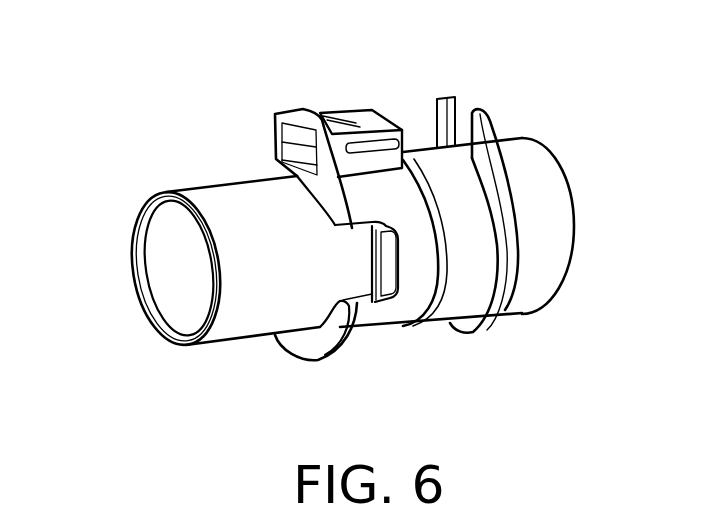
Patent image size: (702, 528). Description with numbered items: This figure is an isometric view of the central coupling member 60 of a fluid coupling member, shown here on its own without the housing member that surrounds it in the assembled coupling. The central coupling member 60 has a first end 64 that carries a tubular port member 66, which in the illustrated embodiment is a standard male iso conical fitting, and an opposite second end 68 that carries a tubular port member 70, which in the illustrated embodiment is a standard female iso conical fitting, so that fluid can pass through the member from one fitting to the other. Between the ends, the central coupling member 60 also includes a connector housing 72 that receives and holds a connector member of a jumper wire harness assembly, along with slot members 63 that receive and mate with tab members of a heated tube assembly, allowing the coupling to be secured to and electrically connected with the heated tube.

The central coupling member 60 is at (95, 110).
The slot members 63 is at (383, 280).
The first end 64 is at (225, 343).
The tubular port member 66 is at (207, 200).
The second end 68 is at (527, 313).
The tubular port member 70 is at (541, 158).
The connector housing 72 is at (352, 122).